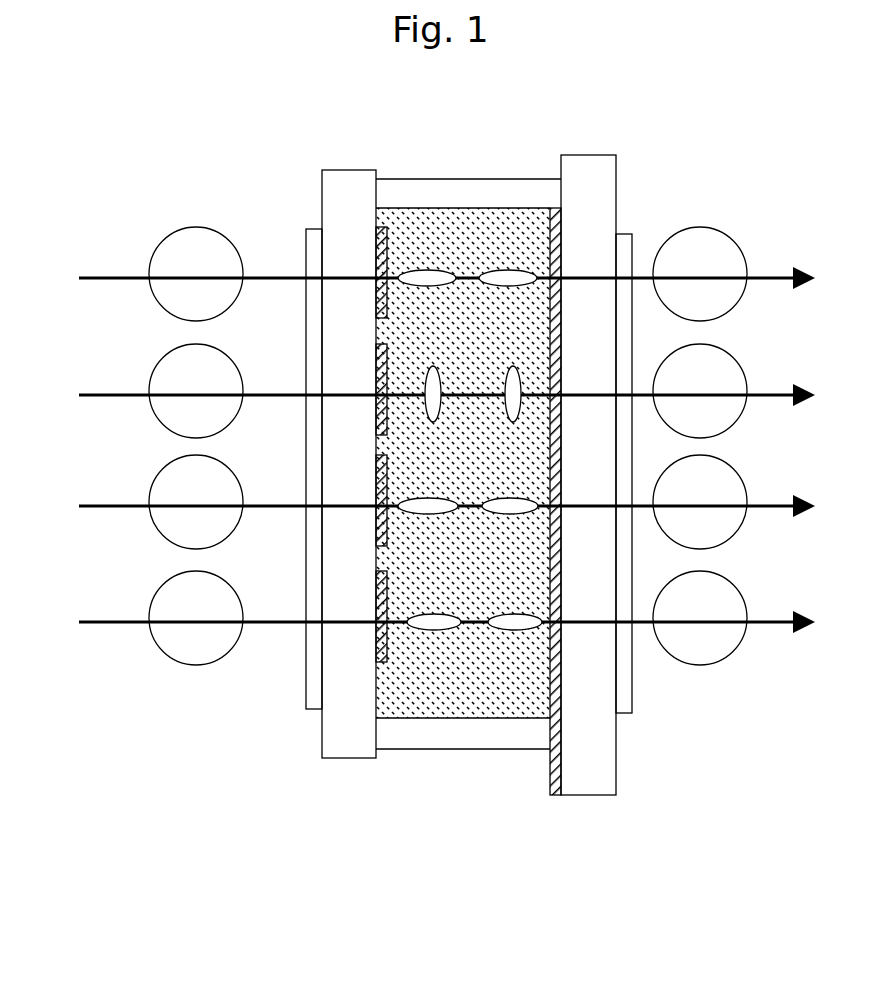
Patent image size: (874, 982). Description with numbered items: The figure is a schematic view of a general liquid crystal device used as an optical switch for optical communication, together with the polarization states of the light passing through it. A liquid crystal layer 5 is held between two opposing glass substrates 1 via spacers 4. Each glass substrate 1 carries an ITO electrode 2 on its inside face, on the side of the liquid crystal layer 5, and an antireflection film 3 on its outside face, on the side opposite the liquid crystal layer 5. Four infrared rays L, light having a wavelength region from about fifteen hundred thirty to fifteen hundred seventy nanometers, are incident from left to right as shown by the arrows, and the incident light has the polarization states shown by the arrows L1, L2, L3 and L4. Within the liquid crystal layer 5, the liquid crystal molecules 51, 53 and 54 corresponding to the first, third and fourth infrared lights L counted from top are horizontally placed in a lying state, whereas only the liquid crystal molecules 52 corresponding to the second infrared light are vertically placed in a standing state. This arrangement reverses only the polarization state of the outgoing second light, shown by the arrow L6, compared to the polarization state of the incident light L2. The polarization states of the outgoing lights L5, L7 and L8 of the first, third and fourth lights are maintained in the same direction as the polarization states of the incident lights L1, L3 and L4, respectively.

The glass substrate 1 is at (345, 172).
The ITO electrode 2 is at (380, 212).
The antireflection film 3 is at (313, 703).
The spacer 4 is at (473, 180).
The liquid crystal layer 5 is at (510, 703).
The liquid crystal molecule 51 is at (500, 270).
The liquid crystal molecule 52 is at (505, 372).
The liquid crystal molecule 53 is at (506, 498).
The liquid crystal molecule 54 is at (510, 614).
The infrared ray L is at (436, 452).
The polarization state of incident light L1 is at (175, 243).
The polarization state of incident light L2 is at (175, 360).
The polarization state of incident light L3 is at (175, 471).
The polarization state of incident light L4 is at (175, 587).
The polarization state of outgoing light L5 is at (678, 216).
The polarization state of outgoing light L6 is at (722, 335).
The polarization state of outgoing light L7 is at (678, 444).
The polarization state of outgoing light L8 is at (722, 562).